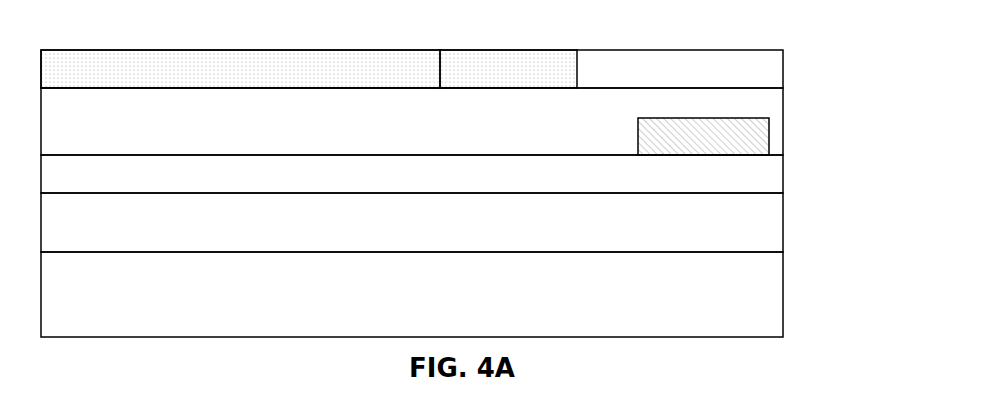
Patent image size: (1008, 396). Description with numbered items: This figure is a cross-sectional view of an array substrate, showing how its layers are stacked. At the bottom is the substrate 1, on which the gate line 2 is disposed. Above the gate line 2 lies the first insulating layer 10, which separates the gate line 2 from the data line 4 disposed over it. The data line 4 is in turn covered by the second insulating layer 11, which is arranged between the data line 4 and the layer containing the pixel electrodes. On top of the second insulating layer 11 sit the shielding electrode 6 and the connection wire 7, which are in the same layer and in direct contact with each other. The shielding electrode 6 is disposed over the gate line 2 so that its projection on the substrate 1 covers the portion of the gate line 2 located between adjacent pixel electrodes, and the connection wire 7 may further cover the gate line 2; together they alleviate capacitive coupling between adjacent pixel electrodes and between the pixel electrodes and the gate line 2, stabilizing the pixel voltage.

The substrate 1 is at (783, 300).
The gate line 2 is at (783, 227).
The first insulating layer 10 is at (783, 172).
The second insulating layer 11 is at (783, 104).
The data line 4 is at (767, 139).
The shielding electrode 6 is at (127, 50).
The connection wire 7 is at (472, 47).